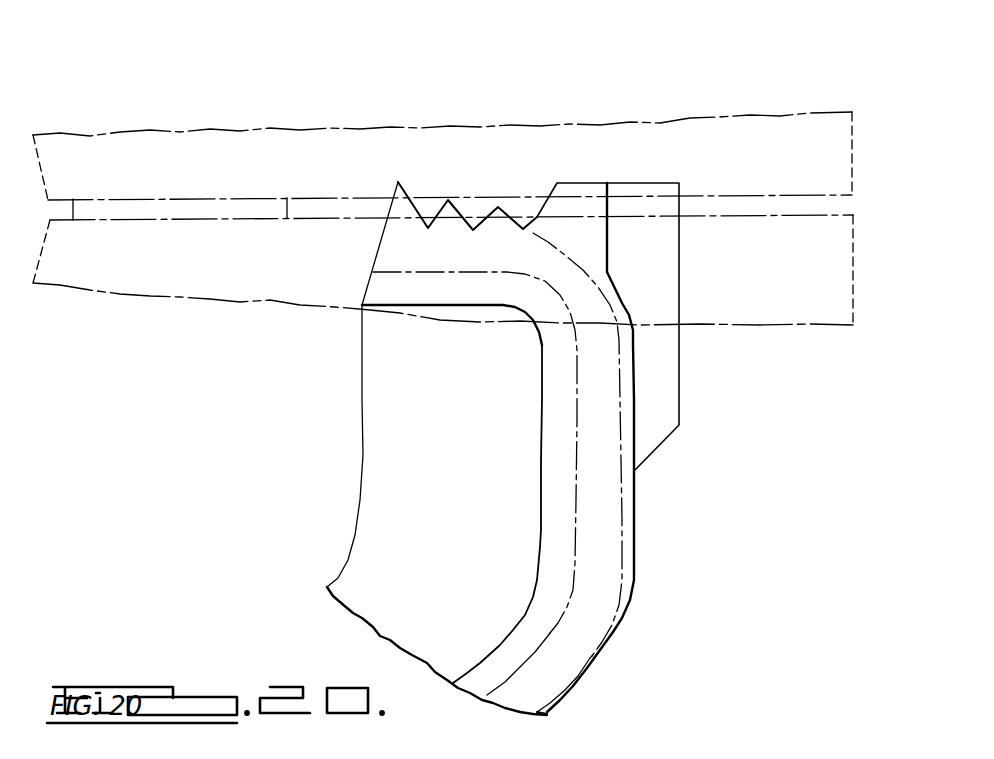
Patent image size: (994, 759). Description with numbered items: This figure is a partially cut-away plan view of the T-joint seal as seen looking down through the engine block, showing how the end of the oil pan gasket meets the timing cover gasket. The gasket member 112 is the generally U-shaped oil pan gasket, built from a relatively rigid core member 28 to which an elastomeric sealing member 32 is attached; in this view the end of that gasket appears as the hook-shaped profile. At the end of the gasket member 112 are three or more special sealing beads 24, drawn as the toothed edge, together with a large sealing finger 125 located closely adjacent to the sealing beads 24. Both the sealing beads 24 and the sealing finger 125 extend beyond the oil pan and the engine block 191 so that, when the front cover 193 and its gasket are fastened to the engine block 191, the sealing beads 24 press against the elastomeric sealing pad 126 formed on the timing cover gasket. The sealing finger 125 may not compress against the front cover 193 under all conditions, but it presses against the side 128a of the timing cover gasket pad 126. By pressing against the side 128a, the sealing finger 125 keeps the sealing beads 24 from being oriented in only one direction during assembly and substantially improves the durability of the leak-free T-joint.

The sealing beads 24 is at (497, 207).
The sealing pad 126 is at (311, 204).
The front cover 193 is at (855, 130).
The engine block 191 is at (853, 297).
The sealing finger 125 is at (668, 243).
The side of timing cover gasket pad 128a is at (535, 219).
The core member 28 is at (398, 507).
The sealing member 32 is at (606, 489).
The gasket member 112 is at (636, 640).